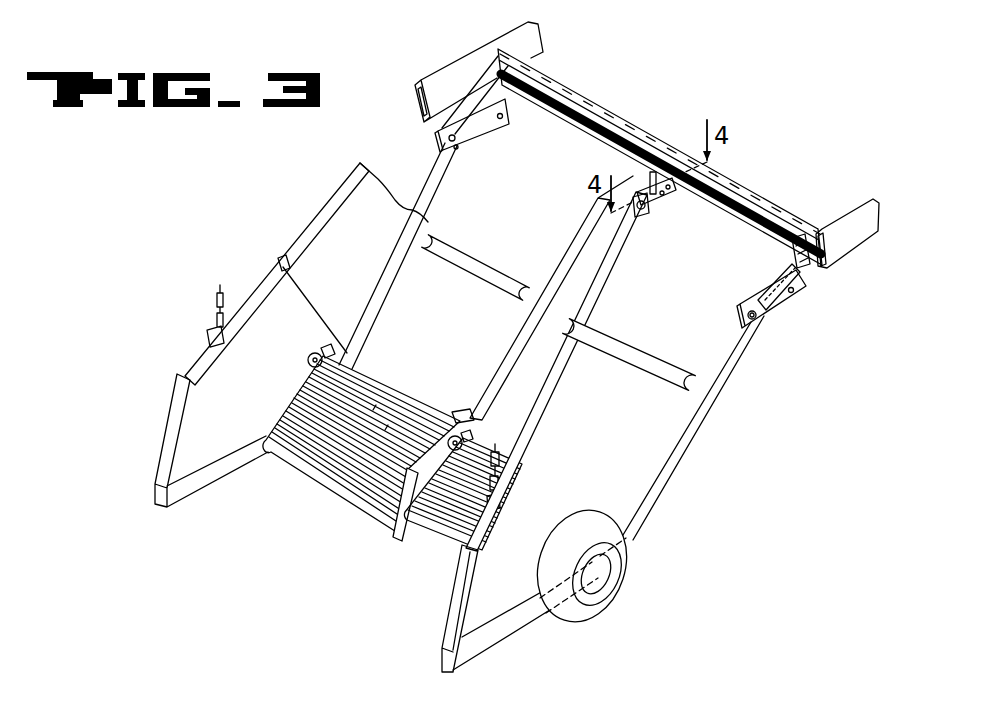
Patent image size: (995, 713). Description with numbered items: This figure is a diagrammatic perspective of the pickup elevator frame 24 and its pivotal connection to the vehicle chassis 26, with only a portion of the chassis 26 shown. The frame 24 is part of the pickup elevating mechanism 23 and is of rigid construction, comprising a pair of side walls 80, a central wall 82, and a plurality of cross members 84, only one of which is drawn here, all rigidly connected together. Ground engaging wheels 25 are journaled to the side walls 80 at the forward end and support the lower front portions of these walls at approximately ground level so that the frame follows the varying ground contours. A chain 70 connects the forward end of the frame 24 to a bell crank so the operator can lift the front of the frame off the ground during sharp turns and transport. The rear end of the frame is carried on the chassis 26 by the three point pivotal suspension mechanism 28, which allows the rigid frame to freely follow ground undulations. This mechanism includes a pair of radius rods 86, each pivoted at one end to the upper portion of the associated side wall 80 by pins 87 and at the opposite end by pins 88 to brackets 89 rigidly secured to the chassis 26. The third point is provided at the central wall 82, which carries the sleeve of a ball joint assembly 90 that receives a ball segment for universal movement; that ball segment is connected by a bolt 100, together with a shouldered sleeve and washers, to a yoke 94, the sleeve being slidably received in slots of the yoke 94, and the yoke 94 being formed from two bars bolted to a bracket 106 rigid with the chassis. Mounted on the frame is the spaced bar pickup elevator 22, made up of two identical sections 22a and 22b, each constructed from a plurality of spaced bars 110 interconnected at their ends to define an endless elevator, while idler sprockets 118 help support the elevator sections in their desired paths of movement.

The spaced bar pickup elevator 22 is at (384, 464).
The elevator section 22a is at (417, 532).
The elevator section 22b is at (303, 464).
The pickup elevating mechanism 23 is at (320, 214).
The pickup elevator frame 24 is at (165, 432).
The ground engaging wheels 25 is at (580, 613).
The chassis 26 is at (846, 250).
The three point pivotal suspension mechanism 28 is at (430, 137).
The chain 70 is at (213, 300).
The side walls 80 is at (268, 298).
The central wall 82 is at (512, 358).
The cross members 84 is at (636, 357).
The radius rods 86 is at (456, 141).
The pins 87 is at (504, 119).
The pins 88 is at (458, 150).
The brackets 89 is at (480, 86).
The ball joint assembly 90 is at (648, 215).
The yoke 94 is at (665, 195).
The bolt 100 is at (648, 208).
The bracket 106 is at (650, 173).
The spaced bars 110 is at (385, 430).
The idler sprockets 118 is at (310, 357).